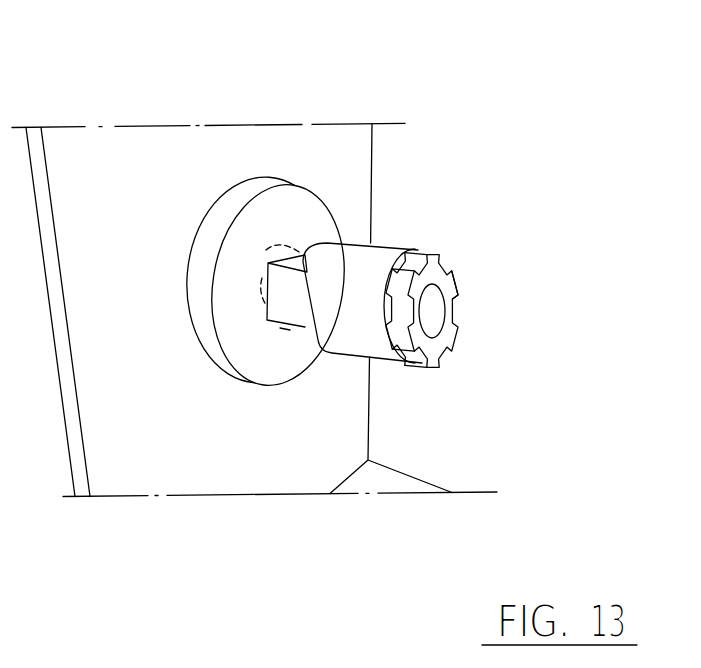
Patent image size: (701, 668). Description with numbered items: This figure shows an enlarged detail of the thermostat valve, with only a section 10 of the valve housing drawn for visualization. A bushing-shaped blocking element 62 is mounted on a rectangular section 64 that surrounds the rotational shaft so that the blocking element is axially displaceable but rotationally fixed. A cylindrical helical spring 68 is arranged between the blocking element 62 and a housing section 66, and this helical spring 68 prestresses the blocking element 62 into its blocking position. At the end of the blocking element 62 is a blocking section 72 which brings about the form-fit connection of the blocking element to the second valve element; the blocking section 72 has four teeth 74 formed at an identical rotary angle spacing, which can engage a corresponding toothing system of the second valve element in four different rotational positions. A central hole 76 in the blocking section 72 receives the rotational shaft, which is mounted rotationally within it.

The section of the housing 10 is at (163, 175).
The blocking element 62 is at (370, 260).
The rectangular section 64 is at (280, 297).
The housing section 66 is at (293, 208).
The helical spring 68 is at (297, 333).
The blocking section 72 is at (442, 273).
The teeth 74 is at (457, 302).
The central hole 76 is at (430, 320).